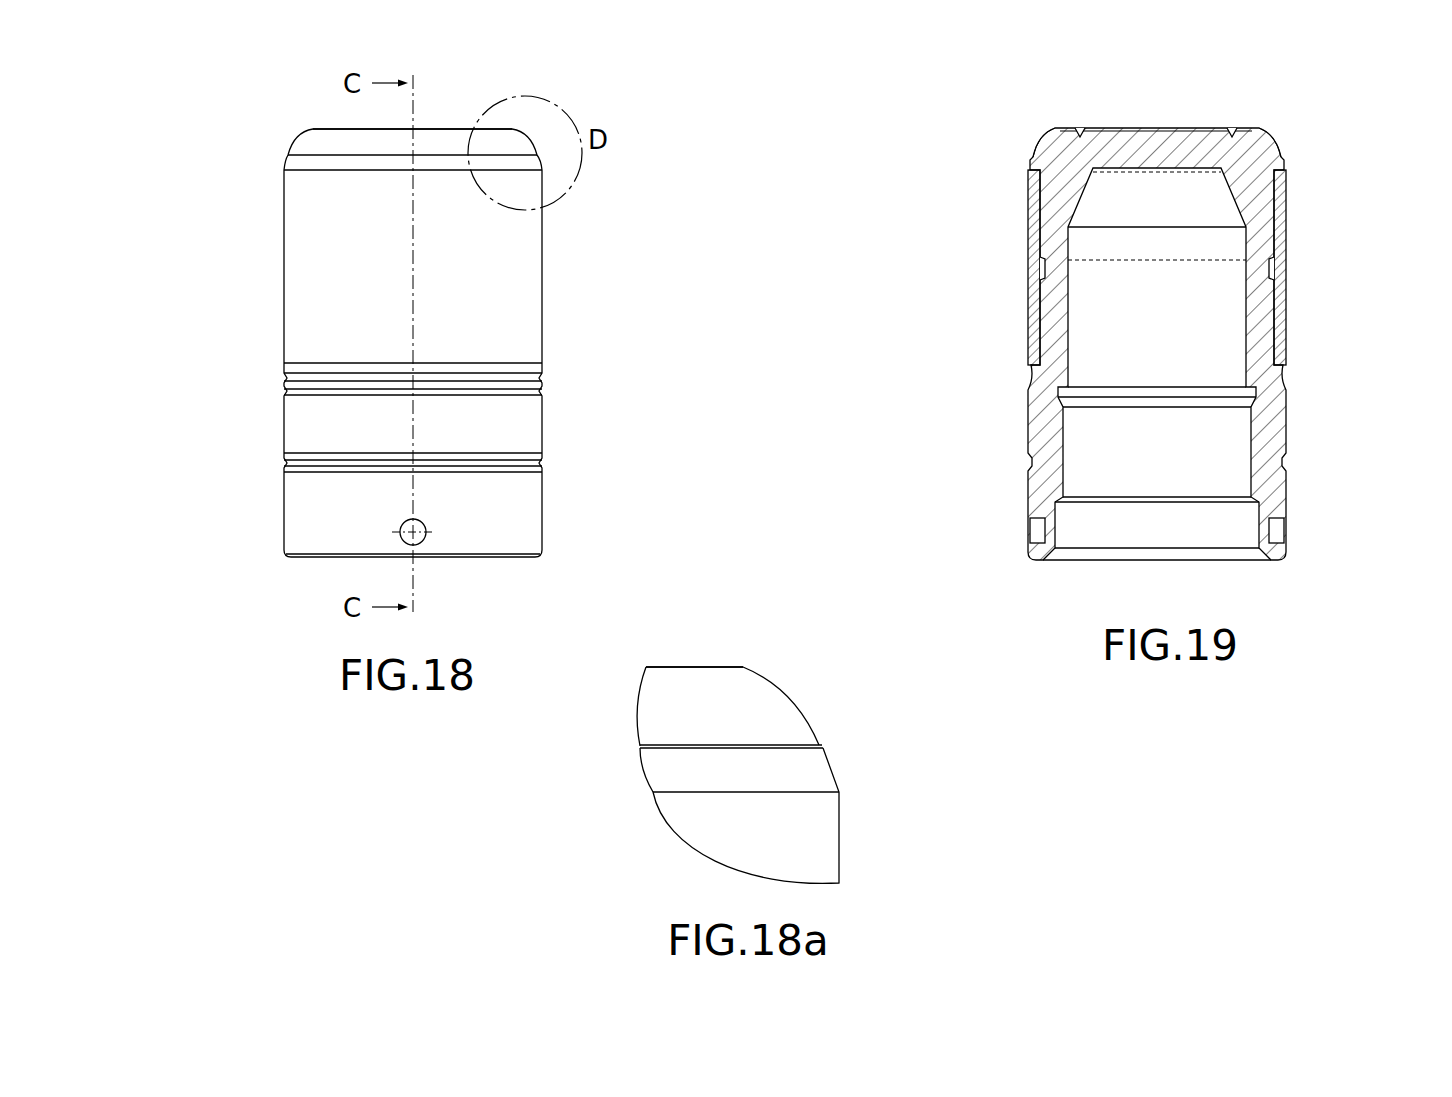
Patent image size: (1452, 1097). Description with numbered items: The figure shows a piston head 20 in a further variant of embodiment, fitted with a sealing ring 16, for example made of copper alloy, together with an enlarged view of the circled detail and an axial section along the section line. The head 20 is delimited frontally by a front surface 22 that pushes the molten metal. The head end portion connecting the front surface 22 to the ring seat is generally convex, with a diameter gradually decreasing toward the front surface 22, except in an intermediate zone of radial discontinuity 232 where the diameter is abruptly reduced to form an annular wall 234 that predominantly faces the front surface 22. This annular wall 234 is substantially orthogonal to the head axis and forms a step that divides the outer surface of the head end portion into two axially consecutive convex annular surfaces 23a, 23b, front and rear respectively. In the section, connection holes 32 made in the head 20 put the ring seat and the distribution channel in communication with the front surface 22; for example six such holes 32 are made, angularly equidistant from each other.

In FIG. 18, the sealing ring 16 is at (508, 281).
In FIG. 19, the sealing ring 16 is at (1287, 258).
In FIG. 18, the piston head 20 is at (447, 299).
In FIG. 19, the piston head 20 is at (1124, 302).
In FIG. 18, the front surface 22 is at (331, 129).
In FIG. 18A, the front surface 22 is at (738, 667).
In FIG. 19, the front surface 22 is at (1160, 127).
In FIG. 18A, the front convex annular surface 23a is at (703, 696).
In FIG. 19, the front convex annular surface 23a is at (1272, 140).
In FIG. 18A, the rear convex annular surface 23b is at (810, 769).
In FIG. 19, the rear convex annular surface 23b is at (1030, 160).
In FIG. 19, the connection holes 32 is at (1233, 132).
In FIG. 18A, the intermediate zone of radial discontinuity 232 is at (750, 724).
In FIG. 18, the annular wall 234 is at (297, 152).
In FIG. 18A, the annular wall 234 is at (671, 746).